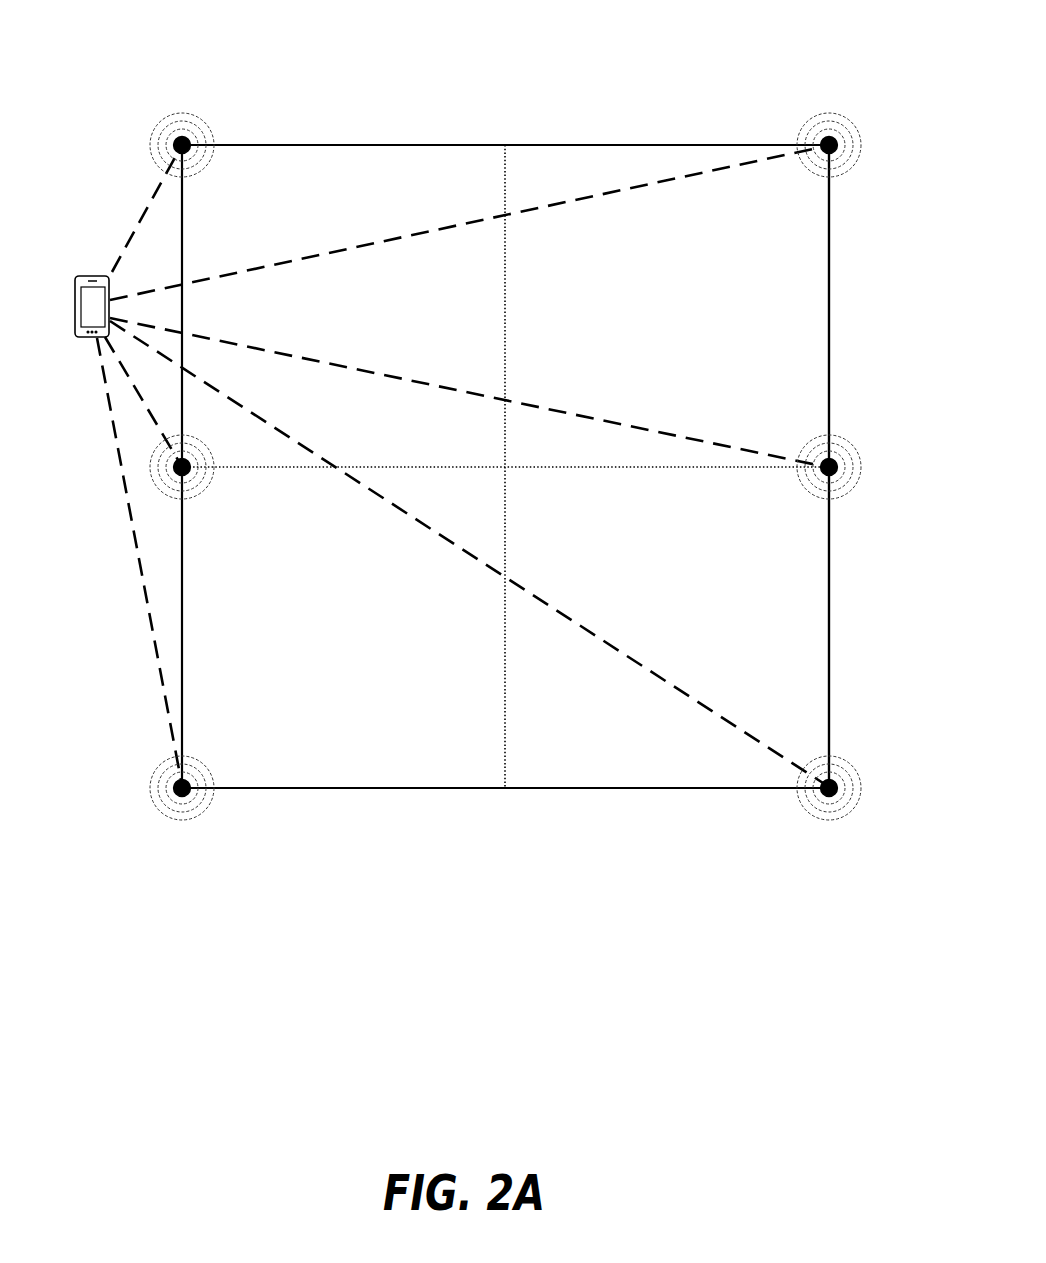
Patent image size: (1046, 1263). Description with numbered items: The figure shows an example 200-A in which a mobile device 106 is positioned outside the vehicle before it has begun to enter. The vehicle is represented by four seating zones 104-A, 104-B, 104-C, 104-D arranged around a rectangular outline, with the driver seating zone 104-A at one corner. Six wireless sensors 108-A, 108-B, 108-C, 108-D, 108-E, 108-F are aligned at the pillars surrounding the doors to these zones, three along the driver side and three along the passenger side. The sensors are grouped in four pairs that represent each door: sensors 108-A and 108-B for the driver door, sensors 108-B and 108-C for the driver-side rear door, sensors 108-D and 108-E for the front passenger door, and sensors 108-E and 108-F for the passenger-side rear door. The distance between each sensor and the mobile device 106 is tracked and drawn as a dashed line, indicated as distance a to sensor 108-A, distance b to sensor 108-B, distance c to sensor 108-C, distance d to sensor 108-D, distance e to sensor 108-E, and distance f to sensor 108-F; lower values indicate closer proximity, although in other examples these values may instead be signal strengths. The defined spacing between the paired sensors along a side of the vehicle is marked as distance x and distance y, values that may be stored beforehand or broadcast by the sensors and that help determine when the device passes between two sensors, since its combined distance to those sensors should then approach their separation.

The example 200-A is at (184, 27).
The seating zone 104-A is at (314, 142).
The seating zone 104-B is at (678, 142).
The seating zone 104-C is at (315, 793).
The seating zone 104-D is at (682, 793).
The mobile device 106 is at (92, 275).
The wireless sensor 108-A is at (176, 150).
The wireless sensor 108-B is at (176, 472).
The wireless sensor 108-C is at (176, 792).
The wireless sensor 108-D is at (836, 150).
The wireless sensor 108-E is at (836, 472).
The wireless sensor 108-F is at (836, 792).
The distance a is at (134, 208).
The distance b is at (150, 399).
The distance c is at (120, 562).
The distance d is at (364, 236).
The distance e is at (366, 355).
The distance f is at (372, 502).
The distance between wireless sensors x is at (820, 306).
The distance between wireless sensors y is at (820, 627).